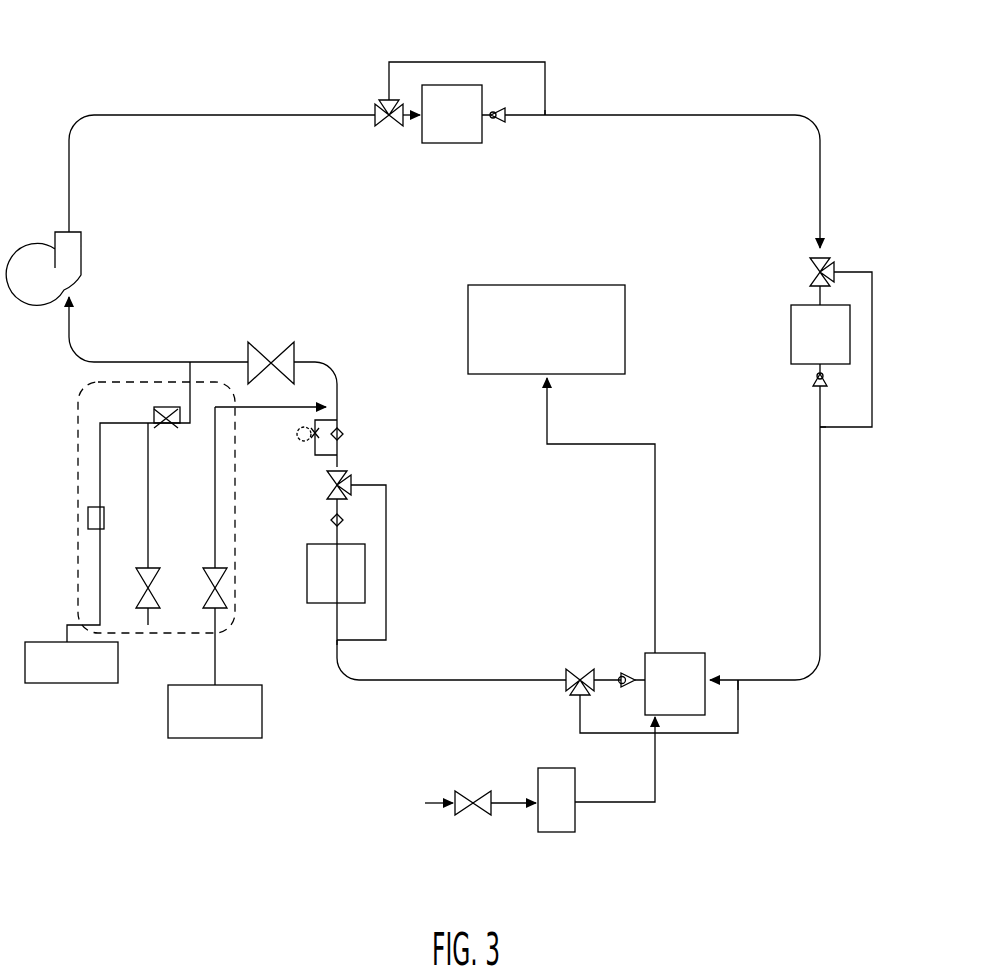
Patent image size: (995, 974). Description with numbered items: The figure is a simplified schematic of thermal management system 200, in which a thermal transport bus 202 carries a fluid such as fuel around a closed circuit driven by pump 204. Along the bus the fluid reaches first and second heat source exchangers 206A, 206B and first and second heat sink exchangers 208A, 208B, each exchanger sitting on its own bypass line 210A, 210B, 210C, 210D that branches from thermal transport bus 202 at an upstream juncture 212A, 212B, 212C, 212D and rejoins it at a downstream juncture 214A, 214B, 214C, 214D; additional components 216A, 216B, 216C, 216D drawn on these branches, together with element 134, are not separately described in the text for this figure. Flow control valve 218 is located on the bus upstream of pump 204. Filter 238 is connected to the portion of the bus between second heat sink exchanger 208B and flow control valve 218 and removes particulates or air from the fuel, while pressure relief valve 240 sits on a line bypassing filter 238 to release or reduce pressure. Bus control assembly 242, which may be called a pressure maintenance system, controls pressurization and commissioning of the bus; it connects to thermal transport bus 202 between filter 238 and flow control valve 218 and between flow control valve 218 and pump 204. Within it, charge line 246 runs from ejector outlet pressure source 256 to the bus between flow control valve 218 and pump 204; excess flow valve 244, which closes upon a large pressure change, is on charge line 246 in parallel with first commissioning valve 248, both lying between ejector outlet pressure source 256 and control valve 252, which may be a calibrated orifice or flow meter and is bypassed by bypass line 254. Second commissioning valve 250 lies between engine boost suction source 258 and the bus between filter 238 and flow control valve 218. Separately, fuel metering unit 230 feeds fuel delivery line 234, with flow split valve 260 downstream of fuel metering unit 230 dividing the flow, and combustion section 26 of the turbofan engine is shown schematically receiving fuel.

The combustion section 26 is at (468, 295).
The fuel supply line 134 is at (653, 530).
The thermal management system 200 is at (202, 89).
The thermal transport bus 202 is at (63, 140).
The pump 204 is at (80, 280).
The first heat source exchanger 206A is at (449, 145).
The second heat source exchanger 206B is at (790, 338).
The first heat sink exchanger 208A is at (676, 652).
The second heat sink exchanger 208B is at (306, 552).
The first bypass line 210A is at (412, 62).
The second bypass line 210B is at (873, 342).
The third bypass line 210C is at (674, 735).
The fourth bypass line 210D is at (388, 551).
The upstream juncture 212A is at (386, 128).
The upstream juncture 212B is at (809, 270).
The upstream juncture 212C is at (739, 683).
The upstream juncture 212D is at (336, 641).
The downstream juncture 214A is at (546, 118).
The downstream juncture 214B is at (818, 427).
The downstream juncture 214C is at (576, 675).
The downstream juncture 214D is at (352, 485).
The check valve 216A is at (500, 125).
The check valve 216B is at (813, 383).
The check valve 216C is at (626, 671).
The check valve 216D is at (331, 519).
The flow control valve 218 is at (267, 342).
The fuel metering unit 230 is at (461, 792).
The fuel delivery line 234 is at (633, 806).
The filter 238 is at (344, 432).
The pressure relief valve 240 is at (305, 430).
The bus control assembly 242 is at (80, 400).
The excess flow valve 244 is at (104, 510).
The charge line 246 is at (99, 450).
The first commissioning valve 248 is at (140, 577).
The second commissioning valve 250 is at (206, 577).
The control valve 252 is at (167, 426).
The bypass line 254 is at (155, 412).
The ejector outlet pressure source 256 is at (87, 685).
The engine boost suction source 258 is at (213, 740).
The flow split valve 260 is at (538, 778).